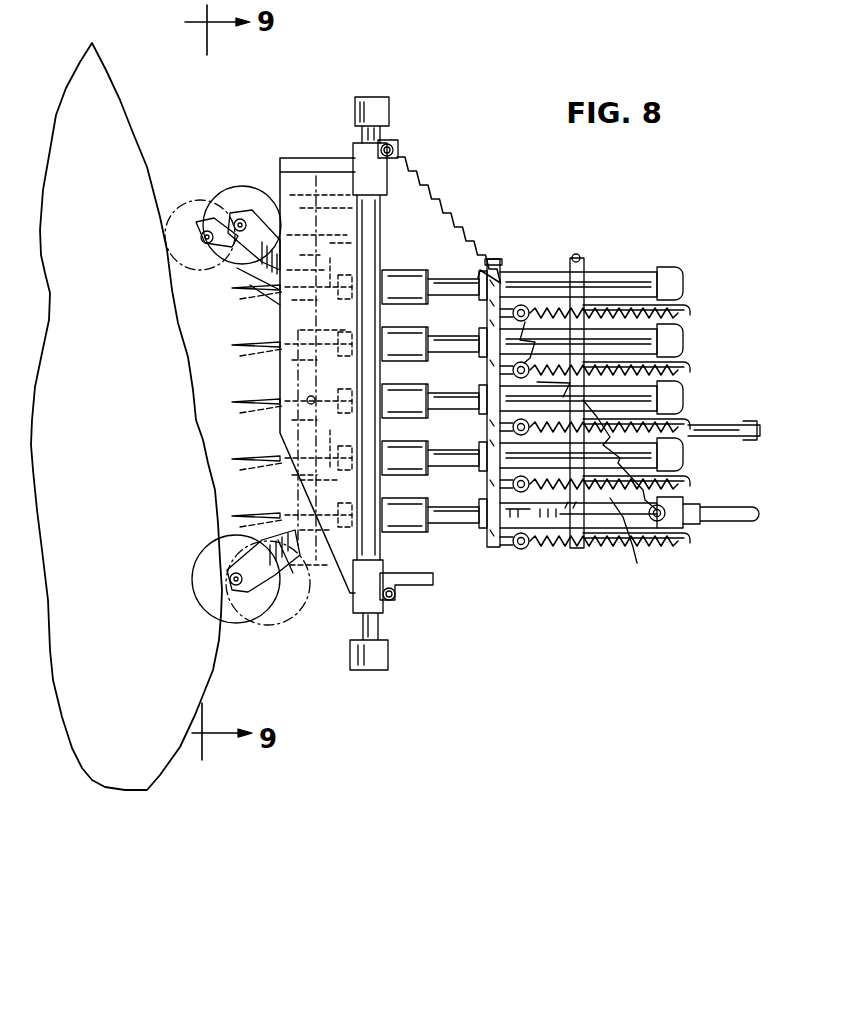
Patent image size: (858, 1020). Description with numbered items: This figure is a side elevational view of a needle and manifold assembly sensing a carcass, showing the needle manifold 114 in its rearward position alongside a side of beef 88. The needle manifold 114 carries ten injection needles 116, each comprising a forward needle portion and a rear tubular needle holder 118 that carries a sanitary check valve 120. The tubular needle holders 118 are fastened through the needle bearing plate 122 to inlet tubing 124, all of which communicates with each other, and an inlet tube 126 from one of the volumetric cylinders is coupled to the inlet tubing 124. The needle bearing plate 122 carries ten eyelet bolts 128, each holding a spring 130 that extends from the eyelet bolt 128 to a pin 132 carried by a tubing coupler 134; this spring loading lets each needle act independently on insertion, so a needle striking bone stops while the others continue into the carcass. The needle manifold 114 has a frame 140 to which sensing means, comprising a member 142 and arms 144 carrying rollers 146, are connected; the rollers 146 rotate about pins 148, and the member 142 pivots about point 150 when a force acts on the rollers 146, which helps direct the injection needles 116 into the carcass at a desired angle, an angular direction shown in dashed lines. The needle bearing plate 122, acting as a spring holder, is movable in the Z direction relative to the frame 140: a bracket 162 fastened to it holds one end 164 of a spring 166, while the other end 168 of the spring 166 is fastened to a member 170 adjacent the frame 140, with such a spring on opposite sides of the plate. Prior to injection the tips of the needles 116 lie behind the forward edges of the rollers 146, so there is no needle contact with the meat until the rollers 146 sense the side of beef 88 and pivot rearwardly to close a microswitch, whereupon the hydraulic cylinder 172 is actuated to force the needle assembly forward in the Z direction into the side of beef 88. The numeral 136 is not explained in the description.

The side of beef 88 is at (80, 359).
The needle manifold 114 is at (493, 568).
The injection needles 116 is at (252, 292).
The tubular needle holder 118 is at (455, 528).
The sanitary check valve 120 is at (414, 530).
The needle bearing plate 122 is at (496, 268).
The inlet tubing 124 is at (626, 285).
The inlet tube 126 is at (745, 518).
The eyelet bolts 128 is at (523, 304).
The spring 130 is at (643, 306).
The pin 132 is at (692, 316).
The tubing coupler 134 is at (580, 285).
The top block 136 is at (365, 135).
The frame 140 is at (348, 595).
The member 142 is at (316, 174).
The arms 144 is at (292, 590).
The rollers 146 is at (252, 200).
The pins 148 is at (240, 218).
The pivot point 150 is at (308, 398).
The bracket 162 is at (573, 530).
The spring end 164 is at (668, 508).
The spring 166 is at (455, 222).
The spring end 168 is at (398, 152).
The member 170 is at (389, 148).
The hydraulic cylinder 172 is at (760, 430).